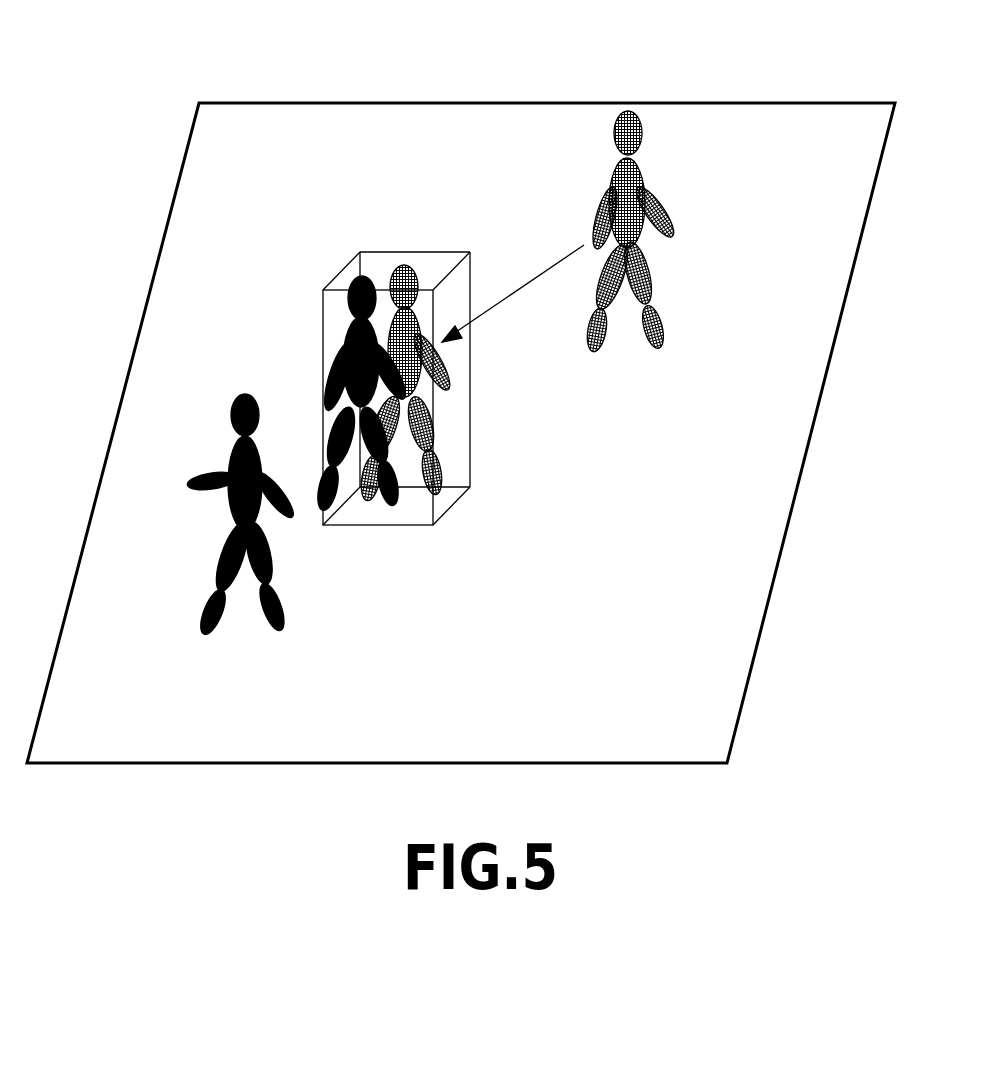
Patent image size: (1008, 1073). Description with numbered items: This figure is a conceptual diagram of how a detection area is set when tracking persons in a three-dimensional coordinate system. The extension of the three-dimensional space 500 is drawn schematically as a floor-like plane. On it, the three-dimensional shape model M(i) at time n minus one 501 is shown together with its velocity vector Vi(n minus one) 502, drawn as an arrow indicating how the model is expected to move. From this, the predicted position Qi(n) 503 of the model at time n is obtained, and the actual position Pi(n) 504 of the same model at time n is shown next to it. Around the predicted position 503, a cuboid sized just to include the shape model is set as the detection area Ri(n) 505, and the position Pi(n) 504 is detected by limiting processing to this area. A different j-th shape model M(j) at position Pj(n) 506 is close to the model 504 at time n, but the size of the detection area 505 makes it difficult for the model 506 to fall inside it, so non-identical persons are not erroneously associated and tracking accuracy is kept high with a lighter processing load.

The extension of a three-dimensional space 500 is at (829, 102).
The three-dimensional shape model M(i) at time n−1 501 is at (638, 168).
The velocity vector Vi(n−1) 502 is at (542, 273).
The predicted position Qi(n) 503 is at (408, 268).
The actual position Pi(n) of three-dimensional shape model M(i) 504 is at (368, 282).
The detection area Ri(n) 505 is at (446, 332).
The position Pj(n) of three-dimensional shape model M(j) 506 is at (253, 397).